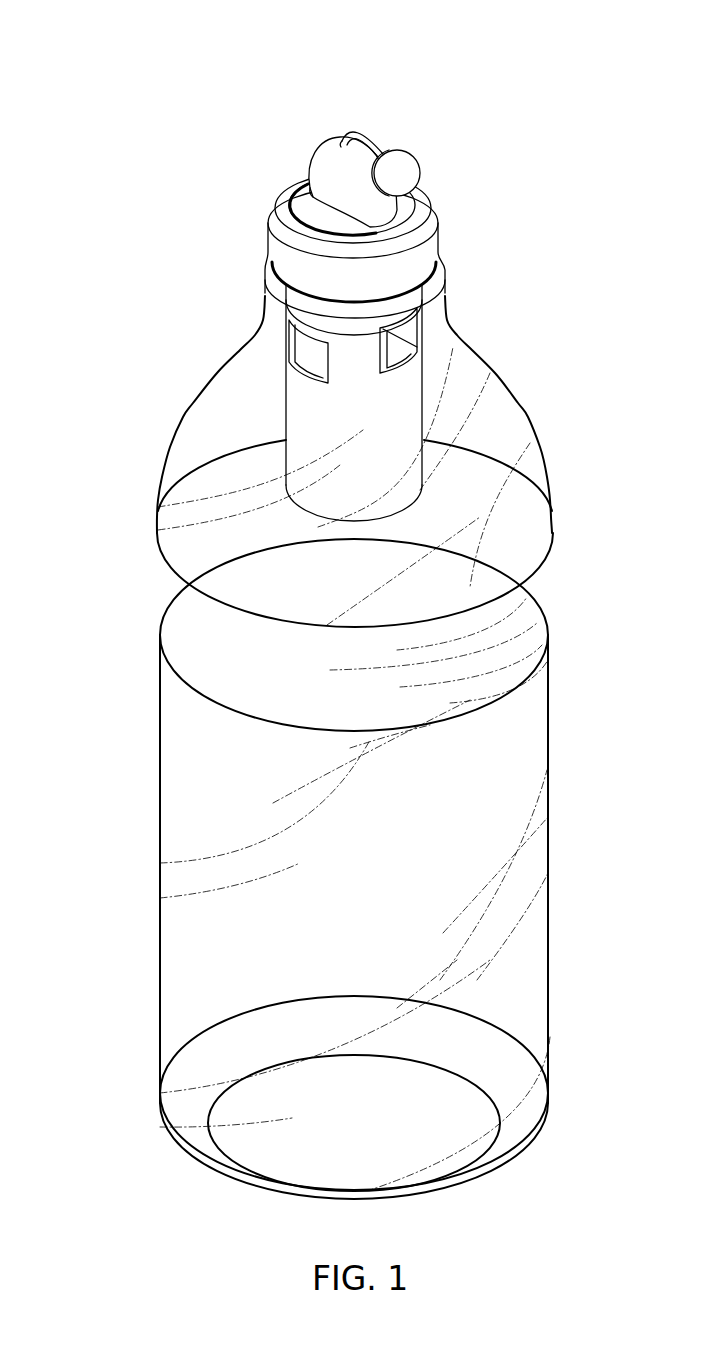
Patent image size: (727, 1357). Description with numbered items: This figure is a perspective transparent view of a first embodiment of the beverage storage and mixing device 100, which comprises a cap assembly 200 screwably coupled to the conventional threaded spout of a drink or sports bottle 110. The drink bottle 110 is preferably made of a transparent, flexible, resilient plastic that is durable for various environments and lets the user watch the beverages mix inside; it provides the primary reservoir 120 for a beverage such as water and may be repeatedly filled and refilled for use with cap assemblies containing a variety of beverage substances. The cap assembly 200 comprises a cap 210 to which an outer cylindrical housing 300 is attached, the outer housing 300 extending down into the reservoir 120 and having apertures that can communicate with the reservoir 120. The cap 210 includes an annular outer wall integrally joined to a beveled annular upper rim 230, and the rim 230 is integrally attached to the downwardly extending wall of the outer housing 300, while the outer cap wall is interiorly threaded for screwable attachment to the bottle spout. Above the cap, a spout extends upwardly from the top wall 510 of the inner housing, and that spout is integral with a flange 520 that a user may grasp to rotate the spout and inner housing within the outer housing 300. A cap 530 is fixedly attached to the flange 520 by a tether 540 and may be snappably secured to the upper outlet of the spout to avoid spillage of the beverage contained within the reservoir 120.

The beverage storage and mixing device 100 is at (340, 599).
The drink bottle 110 is at (308, 747).
The primary reservoir 120 is at (278, 940).
The cap assembly 200 is at (395, 192).
The cap 210 is at (438, 238).
The beveled annular upper rim 230 is at (423, 222).
The outer cylindrical housing 300 is at (283, 398).
The top wall 510 is at (306, 208).
The flange 520 is at (323, 163).
The cap 530 is at (410, 163).
The tether 540 is at (362, 128).